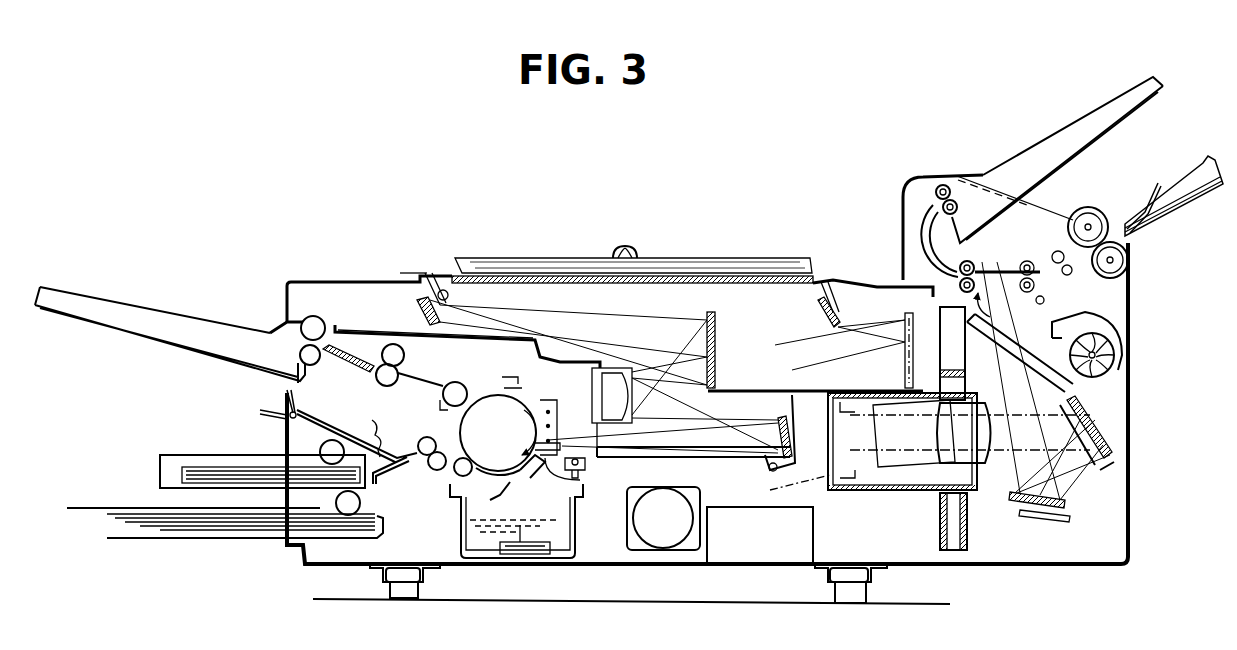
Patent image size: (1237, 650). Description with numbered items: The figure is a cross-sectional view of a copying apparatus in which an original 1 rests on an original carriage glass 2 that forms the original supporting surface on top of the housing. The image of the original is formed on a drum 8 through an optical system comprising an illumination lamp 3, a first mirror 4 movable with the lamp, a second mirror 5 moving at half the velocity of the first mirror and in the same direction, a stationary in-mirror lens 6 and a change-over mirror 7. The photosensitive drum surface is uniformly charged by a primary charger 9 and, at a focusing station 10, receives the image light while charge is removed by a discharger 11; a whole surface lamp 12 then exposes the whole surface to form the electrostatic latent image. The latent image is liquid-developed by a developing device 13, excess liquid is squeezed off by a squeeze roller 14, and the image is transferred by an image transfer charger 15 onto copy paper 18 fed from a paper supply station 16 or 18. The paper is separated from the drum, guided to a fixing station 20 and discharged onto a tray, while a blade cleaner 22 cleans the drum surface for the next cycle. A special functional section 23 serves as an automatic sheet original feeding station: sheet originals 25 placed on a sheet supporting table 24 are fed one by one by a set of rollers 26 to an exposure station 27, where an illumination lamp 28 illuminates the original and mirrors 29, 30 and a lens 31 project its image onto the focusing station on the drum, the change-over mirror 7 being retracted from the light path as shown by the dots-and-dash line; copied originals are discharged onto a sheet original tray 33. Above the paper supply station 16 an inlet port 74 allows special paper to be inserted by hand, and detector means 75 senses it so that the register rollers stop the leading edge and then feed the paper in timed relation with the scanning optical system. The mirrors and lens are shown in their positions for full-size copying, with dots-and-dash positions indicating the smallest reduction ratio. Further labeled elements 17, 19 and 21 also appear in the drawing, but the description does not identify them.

The original 1 is at (687, 258).
The original carriage glass 2 is at (828, 275).
The illumination lamp 3 is at (450, 296).
The first mirror 4 is at (435, 300).
The second mirror 5 is at (705, 318).
The stationary in-mirror lens 6 is at (638, 398).
The change-over mirror 7 is at (770, 430).
The drum 8 is at (485, 395).
The primary charger 9 is at (555, 400).
The focusing station 10 is at (556, 443).
The discharger 11 is at (574, 478).
The whole surface lamp 12 is at (588, 465).
The developing device 13 is at (505, 478).
The squeeze roller 14 is at (455, 478).
The image transfer charger 15 is at (428, 436).
The paper supply station 16 is at (318, 450).
The developer tank 17 is at (370, 506).
The copy paper 18 is at (206, 460).
The transfer roller 19 is at (455, 380).
The fixing station 20 is at (343, 368).
The copy tray 21 is at (188, 348).
The blade cleaner 22 is at (522, 380).
The special functional section 23 is at (1132, 342).
The sheet supporting table 24 is at (1157, 177).
The sheet originals 25 is at (1205, 172).
The set of rollers 26 is at (1097, 210).
The exposure station 27 is at (1000, 312).
The illumination lamp 28 is at (1032, 302).
The mirror 29 is at (1012, 505).
The mirror 30 is at (1085, 460).
The lens 31 is at (1000, 455).
The sheet original tray 33 is at (1107, 133).
The inlet port 74 is at (262, 395).
The detector means 75 is at (372, 420).